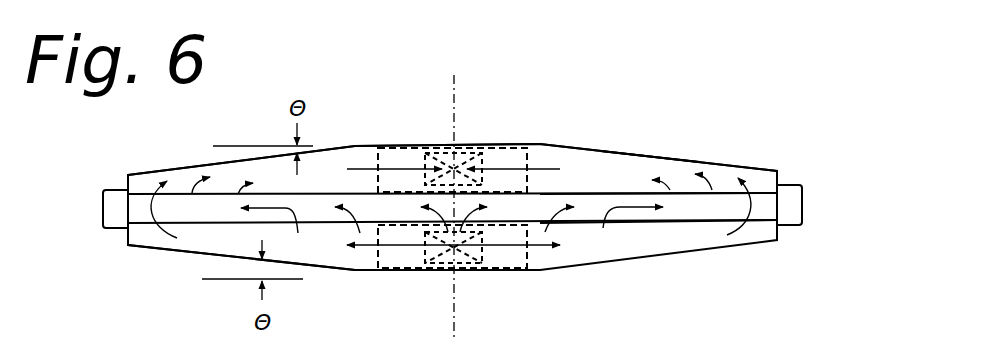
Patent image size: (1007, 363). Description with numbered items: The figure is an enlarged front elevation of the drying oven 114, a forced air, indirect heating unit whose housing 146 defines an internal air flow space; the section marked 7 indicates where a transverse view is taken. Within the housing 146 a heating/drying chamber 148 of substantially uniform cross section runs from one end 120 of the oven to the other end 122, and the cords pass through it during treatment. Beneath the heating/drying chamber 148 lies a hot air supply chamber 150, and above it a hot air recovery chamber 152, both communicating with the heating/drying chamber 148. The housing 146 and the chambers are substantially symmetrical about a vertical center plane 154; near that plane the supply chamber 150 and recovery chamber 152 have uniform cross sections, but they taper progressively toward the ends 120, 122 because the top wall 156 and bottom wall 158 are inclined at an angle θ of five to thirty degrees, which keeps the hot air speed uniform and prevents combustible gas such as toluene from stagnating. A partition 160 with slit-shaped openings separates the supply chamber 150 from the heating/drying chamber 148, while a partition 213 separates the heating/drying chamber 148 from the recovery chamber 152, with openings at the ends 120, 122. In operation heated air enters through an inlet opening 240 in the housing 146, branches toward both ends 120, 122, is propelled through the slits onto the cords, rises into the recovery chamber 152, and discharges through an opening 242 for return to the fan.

The section line 7- 7 is at (103, 210).
The oven 114 is at (642, 125).
The end of the oven 120 is at (772, 168).
The end of the oven 122 is at (149, 172).
The housing 146 is at (722, 161).
The heating/drying chamber 148 is at (602, 203).
The hot air supply chamber 150 is at (668, 238).
The hot air recovery chamber 152 is at (573, 167).
The vertical plane 154 is at (455, 95).
The top wall 156 is at (340, 146).
The bottom wall 158 is at (345, 271).
The partition 160 is at (718, 221).
The partition 213 is at (632, 192).
The inlet opening 240 is at (510, 265).
The opening 242 is at (512, 142).